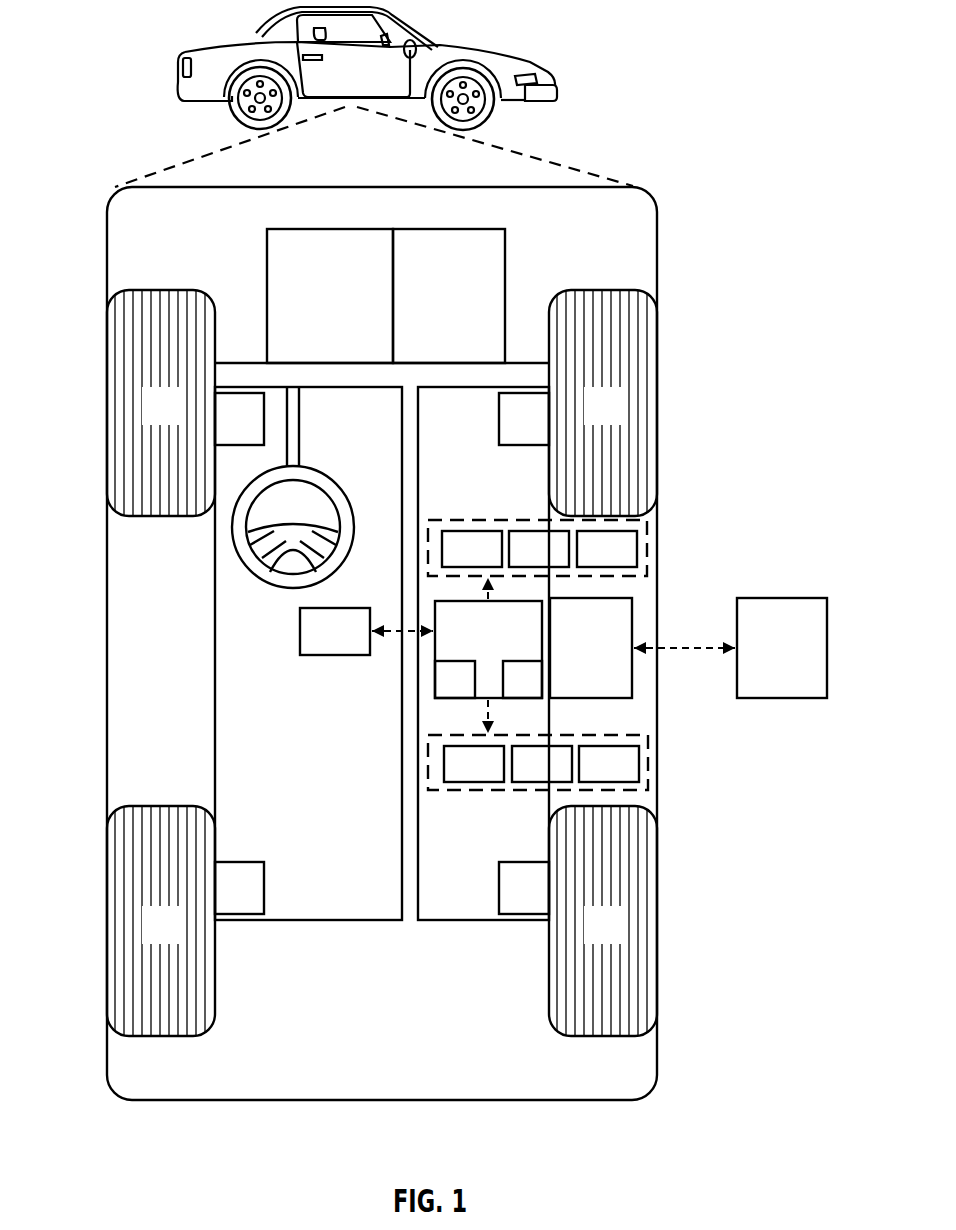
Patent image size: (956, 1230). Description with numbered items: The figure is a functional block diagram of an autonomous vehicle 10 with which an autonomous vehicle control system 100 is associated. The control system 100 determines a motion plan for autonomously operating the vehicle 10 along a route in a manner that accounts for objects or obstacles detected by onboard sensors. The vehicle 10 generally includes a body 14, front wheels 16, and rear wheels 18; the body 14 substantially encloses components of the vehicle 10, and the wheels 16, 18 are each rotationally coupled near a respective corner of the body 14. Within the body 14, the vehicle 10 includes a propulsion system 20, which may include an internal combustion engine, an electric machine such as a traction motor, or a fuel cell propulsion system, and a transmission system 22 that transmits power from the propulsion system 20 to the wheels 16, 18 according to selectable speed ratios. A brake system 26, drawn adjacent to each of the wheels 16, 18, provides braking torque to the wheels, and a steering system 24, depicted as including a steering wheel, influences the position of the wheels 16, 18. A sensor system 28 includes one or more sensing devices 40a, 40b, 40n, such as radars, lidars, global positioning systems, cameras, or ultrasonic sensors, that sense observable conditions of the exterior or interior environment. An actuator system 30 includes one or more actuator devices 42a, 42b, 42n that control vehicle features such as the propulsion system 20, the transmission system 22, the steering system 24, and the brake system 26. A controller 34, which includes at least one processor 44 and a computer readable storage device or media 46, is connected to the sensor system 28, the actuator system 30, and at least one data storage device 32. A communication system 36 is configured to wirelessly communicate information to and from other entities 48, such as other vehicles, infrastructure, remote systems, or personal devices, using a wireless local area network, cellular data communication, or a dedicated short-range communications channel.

The vehicle 10 is at (183, 66).
The autonomous vehicle control system 100 is at (691, 181).
The body 14 is at (107, 643).
The front wheels 16 is at (146, 420).
The rear wheels 18 is at (146, 939).
The propulsion system 20 is at (315, 312).
The transmission system 22 is at (434, 312).
The steering system 24 is at (327, 408).
The brake system 26 is at (226, 434).
The sensor system 28 is at (485, 519).
The actuator system 30 is at (478, 791).
The data storage device 32 is at (321, 646).
The controller 34 is at (474, 645).
The communication system 36 is at (577, 665).
The sensing device 40a is at (452, 564).
The sensing device 40b is at (519, 564).
The sensing device 40n is at (587, 564).
The actuator device 42a is at (454, 779).
The actuator device 42b is at (522, 779).
The actuator device 42n is at (589, 779).
The processor 44 is at (441, 694).
The computer readable storage device or media 46 is at (508, 694).
The other entities 48 is at (768, 665).